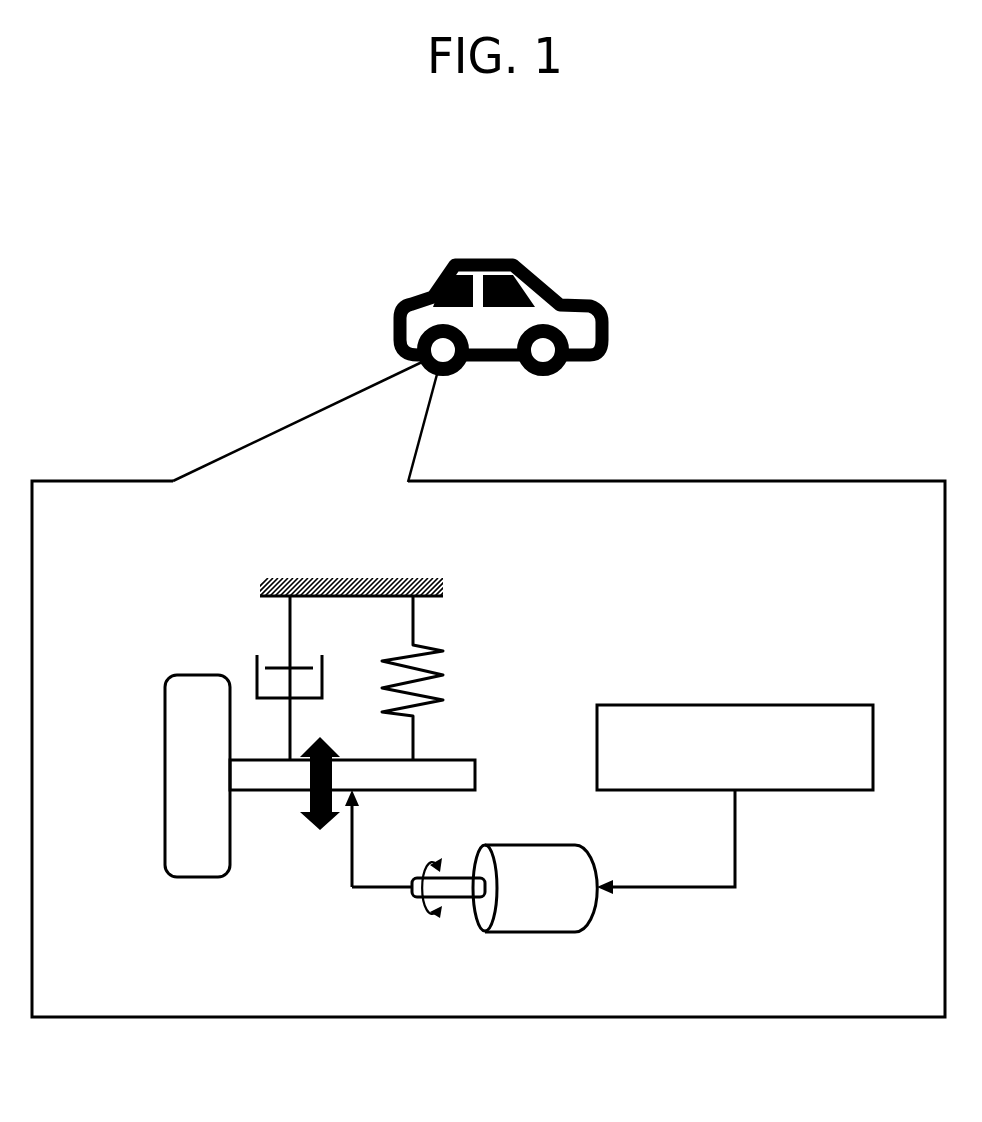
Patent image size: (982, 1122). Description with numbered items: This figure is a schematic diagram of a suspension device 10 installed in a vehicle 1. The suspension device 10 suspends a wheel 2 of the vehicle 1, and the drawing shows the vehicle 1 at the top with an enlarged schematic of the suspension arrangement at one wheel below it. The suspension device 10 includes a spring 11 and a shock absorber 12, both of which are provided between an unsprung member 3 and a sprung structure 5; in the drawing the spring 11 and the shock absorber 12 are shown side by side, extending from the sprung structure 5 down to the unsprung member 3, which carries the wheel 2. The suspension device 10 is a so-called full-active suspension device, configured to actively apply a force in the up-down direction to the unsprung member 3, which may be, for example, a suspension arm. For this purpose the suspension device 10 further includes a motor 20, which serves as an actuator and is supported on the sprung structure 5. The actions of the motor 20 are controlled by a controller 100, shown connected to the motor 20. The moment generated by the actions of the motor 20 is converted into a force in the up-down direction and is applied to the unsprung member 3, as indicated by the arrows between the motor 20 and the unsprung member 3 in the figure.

The vehicle 1 is at (492, 257).
The wheel 2 is at (198, 675).
The unsprung member 3 is at (272, 792).
The sprung structure 5 is at (352, 578).
The suspension device 10 is at (528, 675).
The spring 11 is at (425, 645).
The shock absorber 12 is at (305, 656).
The motor 20 is at (540, 845).
The controller 100 is at (737, 705).